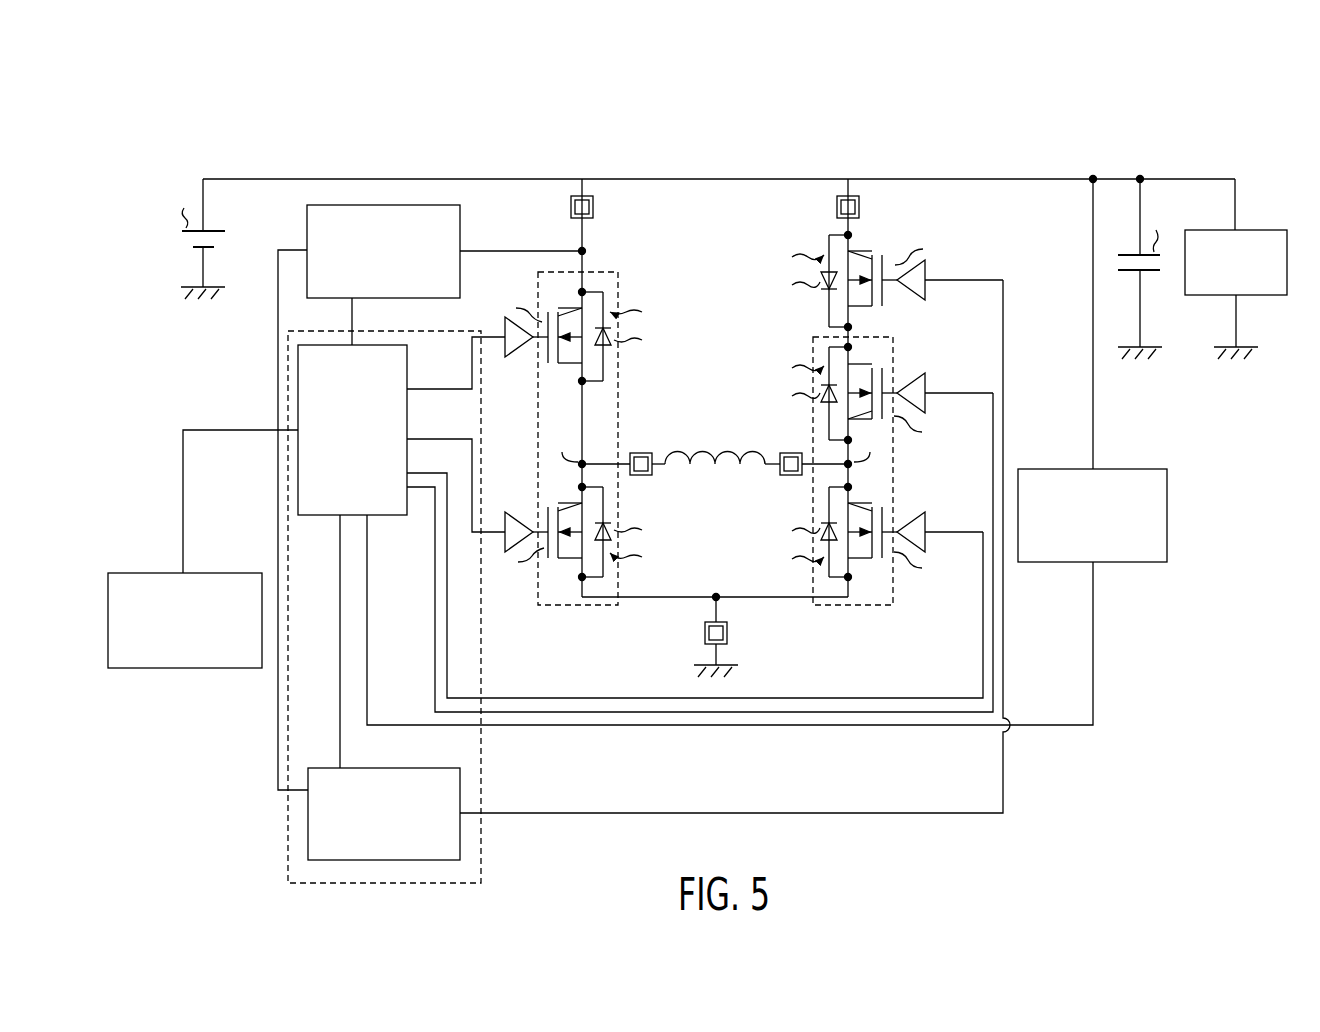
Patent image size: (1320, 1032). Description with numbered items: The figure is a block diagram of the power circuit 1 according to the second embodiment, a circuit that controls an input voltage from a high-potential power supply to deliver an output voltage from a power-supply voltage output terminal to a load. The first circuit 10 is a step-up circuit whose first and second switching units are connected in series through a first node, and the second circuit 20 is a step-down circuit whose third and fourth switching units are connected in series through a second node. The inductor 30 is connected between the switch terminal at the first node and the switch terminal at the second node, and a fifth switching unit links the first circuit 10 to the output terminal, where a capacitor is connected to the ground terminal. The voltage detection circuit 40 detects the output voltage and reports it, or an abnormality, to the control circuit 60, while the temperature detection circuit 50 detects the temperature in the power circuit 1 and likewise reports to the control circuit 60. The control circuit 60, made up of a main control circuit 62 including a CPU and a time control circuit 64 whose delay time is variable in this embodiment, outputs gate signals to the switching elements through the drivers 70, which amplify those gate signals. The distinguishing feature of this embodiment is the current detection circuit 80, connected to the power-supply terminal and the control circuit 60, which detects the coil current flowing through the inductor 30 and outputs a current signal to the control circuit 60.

The power circuit 1 is at (247, 106).
The first circuit 10 is at (850, 610).
The second circuit 20 is at (578, 610).
The inductor 30 is at (705, 450).
The voltage detection circuit 40 is at (1133, 469).
The temperature detection circuit 50 is at (140, 573).
The control circuit 60 is at (286, 863).
The main control circuit 62 is at (298, 386).
The time control circuit 64 is at (308, 824).
The drivers 70 is at (920, 302).
The current detection circuit 80 is at (307, 212).